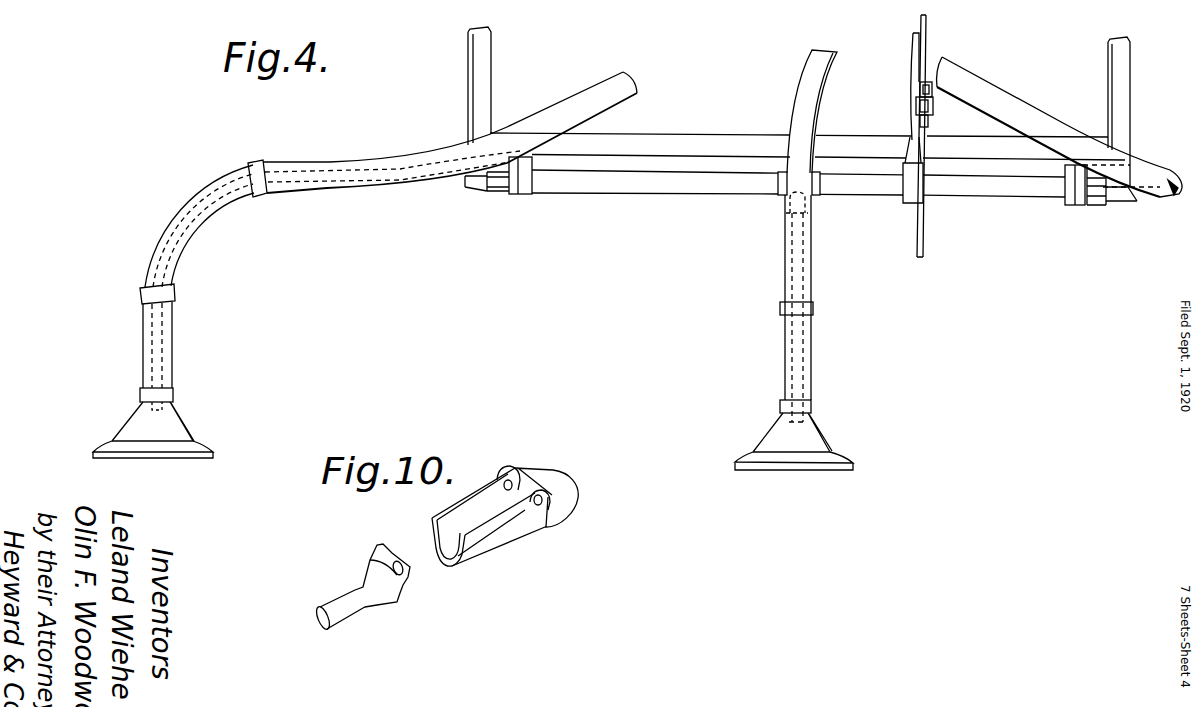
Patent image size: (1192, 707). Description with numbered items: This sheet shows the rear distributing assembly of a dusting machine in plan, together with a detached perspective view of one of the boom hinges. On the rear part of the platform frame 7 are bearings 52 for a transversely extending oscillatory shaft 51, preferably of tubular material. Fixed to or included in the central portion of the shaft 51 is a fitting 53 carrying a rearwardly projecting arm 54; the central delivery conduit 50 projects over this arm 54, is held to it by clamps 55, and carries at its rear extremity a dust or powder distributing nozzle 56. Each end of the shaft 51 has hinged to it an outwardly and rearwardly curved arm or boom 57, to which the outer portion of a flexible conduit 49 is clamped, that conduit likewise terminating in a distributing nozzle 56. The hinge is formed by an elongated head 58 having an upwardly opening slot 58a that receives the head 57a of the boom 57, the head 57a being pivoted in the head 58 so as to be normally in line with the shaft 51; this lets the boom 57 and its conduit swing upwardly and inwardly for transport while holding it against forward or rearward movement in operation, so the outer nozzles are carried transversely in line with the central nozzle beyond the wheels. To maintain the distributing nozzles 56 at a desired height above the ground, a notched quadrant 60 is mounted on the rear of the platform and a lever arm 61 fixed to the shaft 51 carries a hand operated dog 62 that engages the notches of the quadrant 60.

In FIG. 4, the platform frame 7 is at (1131, 100).
In FIG. 4, the conduit 49 is at (622, 100).
In FIG. 4, the conduit 50 is at (798, 103).
In FIG. 4, the oscillatory shaft 51 is at (658, 186).
In FIG. 4, the bearings 52 is at (522, 195).
In FIG. 4, the fitting 53 is at (778, 197).
In FIG. 4, the rearwardly projecting arm 54 is at (812, 355).
In FIG. 4, the clamps 55 is at (780, 307).
In FIG. 4, the distributing nozzle 56 is at (188, 457).
In FIG. 4, the arm or boom 57 is at (450, 187).
In FIG. 10, the arm or boom 57 is at (350, 608).
In FIG. 10, the head of boom 57a is at (392, 590).
In FIG. 4, the elongated head 58 is at (486, 194).
In FIG. 10, the elongated head 58 is at (507, 537).
In FIG. 10, the upwardly opening slot 58a is at (482, 507).
In FIG. 4, the notched quadrant 60 is at (925, 213).
In FIG. 4, the lever arm 61 is at (912, 65).
In FIG. 4, the hand operated dog 62 is at (929, 115).